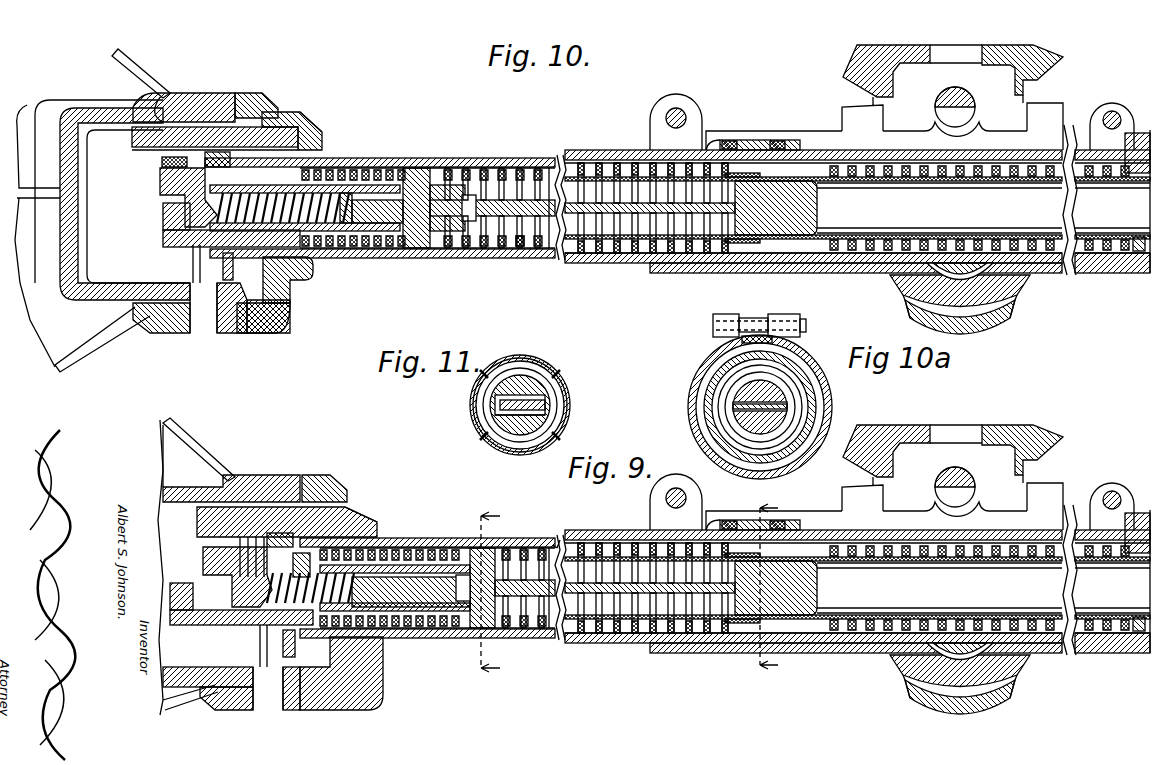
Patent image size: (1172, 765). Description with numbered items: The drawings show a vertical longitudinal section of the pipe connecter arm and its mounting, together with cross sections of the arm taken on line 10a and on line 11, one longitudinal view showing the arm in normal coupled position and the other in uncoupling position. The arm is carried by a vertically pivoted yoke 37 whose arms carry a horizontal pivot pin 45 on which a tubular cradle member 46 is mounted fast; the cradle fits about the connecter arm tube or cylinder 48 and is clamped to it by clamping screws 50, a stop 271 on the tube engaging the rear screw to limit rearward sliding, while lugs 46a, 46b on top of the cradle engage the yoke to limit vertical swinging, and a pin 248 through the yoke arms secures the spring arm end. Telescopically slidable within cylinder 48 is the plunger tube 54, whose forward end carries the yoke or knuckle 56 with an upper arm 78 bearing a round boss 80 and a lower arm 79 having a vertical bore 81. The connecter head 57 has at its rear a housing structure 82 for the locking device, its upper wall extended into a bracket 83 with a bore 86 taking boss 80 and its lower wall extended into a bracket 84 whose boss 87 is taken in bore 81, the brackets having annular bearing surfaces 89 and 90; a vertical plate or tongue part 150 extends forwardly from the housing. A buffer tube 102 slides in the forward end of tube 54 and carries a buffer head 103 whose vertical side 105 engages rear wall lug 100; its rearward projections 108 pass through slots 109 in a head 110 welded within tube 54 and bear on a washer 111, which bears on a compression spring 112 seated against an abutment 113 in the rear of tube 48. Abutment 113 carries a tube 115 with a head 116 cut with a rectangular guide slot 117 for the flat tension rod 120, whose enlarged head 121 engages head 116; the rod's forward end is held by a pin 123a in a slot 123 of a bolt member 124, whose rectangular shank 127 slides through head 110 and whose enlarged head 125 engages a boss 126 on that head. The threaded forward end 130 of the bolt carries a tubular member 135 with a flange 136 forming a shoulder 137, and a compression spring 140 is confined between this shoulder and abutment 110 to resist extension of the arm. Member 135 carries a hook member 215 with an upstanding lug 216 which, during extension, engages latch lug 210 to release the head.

In FIG. 10, the connecter head 57 is at (141, 51).
In FIG. 9, the connecter head 57 is at (193, 441).
In FIG. 10, the annular bearing surface 89 is at (160, 118).
In FIG. 10, the bore 86 is at (190, 92).
In FIG. 9, the bore 86 is at (242, 475).
In FIG. 10, the boss 80 is at (226, 126).
In FIG. 10, the bracket 83 is at (262, 95).
In FIG. 9, the bracket 83 is at (318, 475).
In FIG. 10, the housing structure 82 is at (88, 100).
In FIG. 10, the upper arm 78 is at (286, 125).
In FIG. 9, the upper arm 78 is at (330, 507).
In FIG. 10, the yoke or knuckle 56 is at (312, 124).
In FIG. 9, the yoke or knuckle 56 is at (378, 505).
In FIG. 10, the compression spring 140 is at (415, 168).
In FIG. 9, the compression spring 140 is at (470, 610).
In FIG. 10, the tubular member 135 is at (330, 170).
In FIG. 9, the tubular member 135 is at (398, 628).
In FIG. 10, the plunger tube 54 is at (378, 168).
In FIG. 11, the plunger tube 54 is at (535, 360).
In FIG. 9, the plunger tube 54 is at (424, 538).
In FIG. 10, the forward end of bolt 130 is at (370, 170).
In FIG. 10, the head 110 is at (415, 158).
In FIG. 11, the head 110 is at (523, 378).
In FIG. 9, the head 110 is at (520, 538).
In FIG. 10, the washer 111 is at (448, 168).
In FIG. 9, the washer 111 is at (540, 630).
In FIG. 10, the boss 126 is at (472, 170).
In FIG. 11, the boss 126 is at (500, 410).
In FIG. 9, the boss 126 is at (530, 628).
In FIG. 10, the compression spring 112 is at (502, 170).
In FIG. 10A, the compression spring 112 is at (730, 425).
In FIG. 9, the compression spring 112 is at (565, 545).
In FIG. 10, the enlarged head 125 is at (549, 166).
In FIG. 9, the enlarged head 125 is at (560, 633).
In FIG. 10, the connecter arm tube or cylinder 48 is at (585, 150).
In FIG. 10A, the connecter arm tube or cylinder 48 is at (708, 400).
In FIG. 9, the connecter arm tube or cylinder 48 is at (625, 643).
In FIG. 10, the tension rod 120 is at (625, 177).
In FIG. 11, the tension rod 120 is at (566, 409).
In FIG. 10A, the tension rod 120 is at (790, 407).
In FIG. 9, the tension rod 120 is at (612, 557).
In FIG. 10, the vertical plate or tongue part 150 is at (682, 112).
In FIG. 10, the stop 271 is at (770, 140).
In FIG. 10A, the stop 271 is at (713, 328).
In FIG. 9, the stop 271 is at (778, 520).
In FIG. 10, the pin 248 is at (961, 97).
In FIG. 9, the pin 248 is at (961, 477).
In FIG. 10, the yoke 37 is at (1057, 93).
In FIG. 9, the yoke 37 is at (1057, 473).
In FIG. 10, the clamping screws 50 is at (1110, 112).
In FIG. 10A, the clamping screws 50 is at (750, 325).
In FIG. 9, the clamping screws 50 is at (684, 496).
In FIG. 10, the abutment 113 is at (1137, 133).
In FIG. 9, the abutment 113 is at (1140, 513).
In FIG. 10, the lug 46a is at (862, 114).
In FIG. 9, the lug 46a is at (862, 494).
In FIG. 10, the lug 46b is at (1043, 122).
In FIG. 9, the lug 46b is at (1043, 502).
In FIG. 10, the buffer head 103 is at (231, 158).
In FIG. 9, the buffer head 103 is at (283, 533).
In FIG. 10, the lug 210 is at (205, 212).
In FIG. 9, the lug 210 is at (252, 607).
In FIG. 10, the flange 136 is at (295, 187).
In FIG. 9, the flange 136 is at (318, 546).
In FIG. 10, the upstanding lug 216 is at (163, 227).
In FIG. 9, the upstanding lug 216 is at (181, 583).
In FIG. 10, the hook member 215 is at (182, 247).
In FIG. 9, the hook member 215 is at (200, 625).
In FIG. 10, the buffer tube 102 is at (352, 258).
In FIG. 9, the buffer tube 102 is at (397, 538).
In FIG. 10, the shank 127 is at (428, 217).
In FIG. 11, the shank 127 is at (505, 438).
In FIG. 10, the pin 123a is at (468, 222).
In FIG. 9, the pin 123a is at (463, 602).
In FIG. 10, the bolt member 124 is at (520, 250).
In FIG. 10, the bracket 84 is at (300, 301).
In FIG. 10, the annular bearing surface 90 is at (135, 338).
In FIG. 10, the vertical bore 81 is at (172, 333).
In FIG. 10, the boss 87 is at (233, 333).
In FIG. 9, the boss 87 is at (240, 710).
In FIG. 10, the lower arm 79 is at (260, 333).
In FIG. 9, the lower arm 79 is at (340, 710).
In FIG. 10, the enlarged head 121 is at (818, 214).
In FIG. 9, the enlarged head 121 is at (818, 597).
In FIG. 10, the tube 115 is at (920, 236).
In FIG. 10A, the tube 115 is at (775, 385).
In FIG. 9, the tube 115 is at (970, 612).
In FIG. 10, the head 116 is at (760, 243).
In FIG. 10A, the head 116 is at (800, 392).
In FIG. 9, the head 116 is at (780, 623).
In FIG. 10, the cradle member 46 is at (870, 273).
In FIG. 10A, the cradle member 46 is at (700, 366).
In FIG. 9, the cradle member 46 is at (845, 653).
In FIG. 10, the horizontal pivot pin 45 is at (968, 290).
In FIG. 9, the horizontal pivot pin 45 is at (912, 668).
In FIG. 11, the slots 109 is at (484, 372).
In FIG. 11, the rearward projections 108 is at (480, 388).
In FIG. 9, the rearward projections 108 is at (450, 550).
In FIG. 11, the slot 123 is at (495, 399).
In FIG. 10A, the rectangular guide slot 117 is at (720, 412).
In FIG. 9, the rear wall lug 100 is at (258, 650).
In FIG. 9, the shoulder 137 is at (310, 645).
In FIG. 9, the vertical side of buffer plate 105 is at (290, 710).
In FIG. 9, the section line 11 is at (500, 592).
In FIG. 9, the section line 10a is at (753, 584).